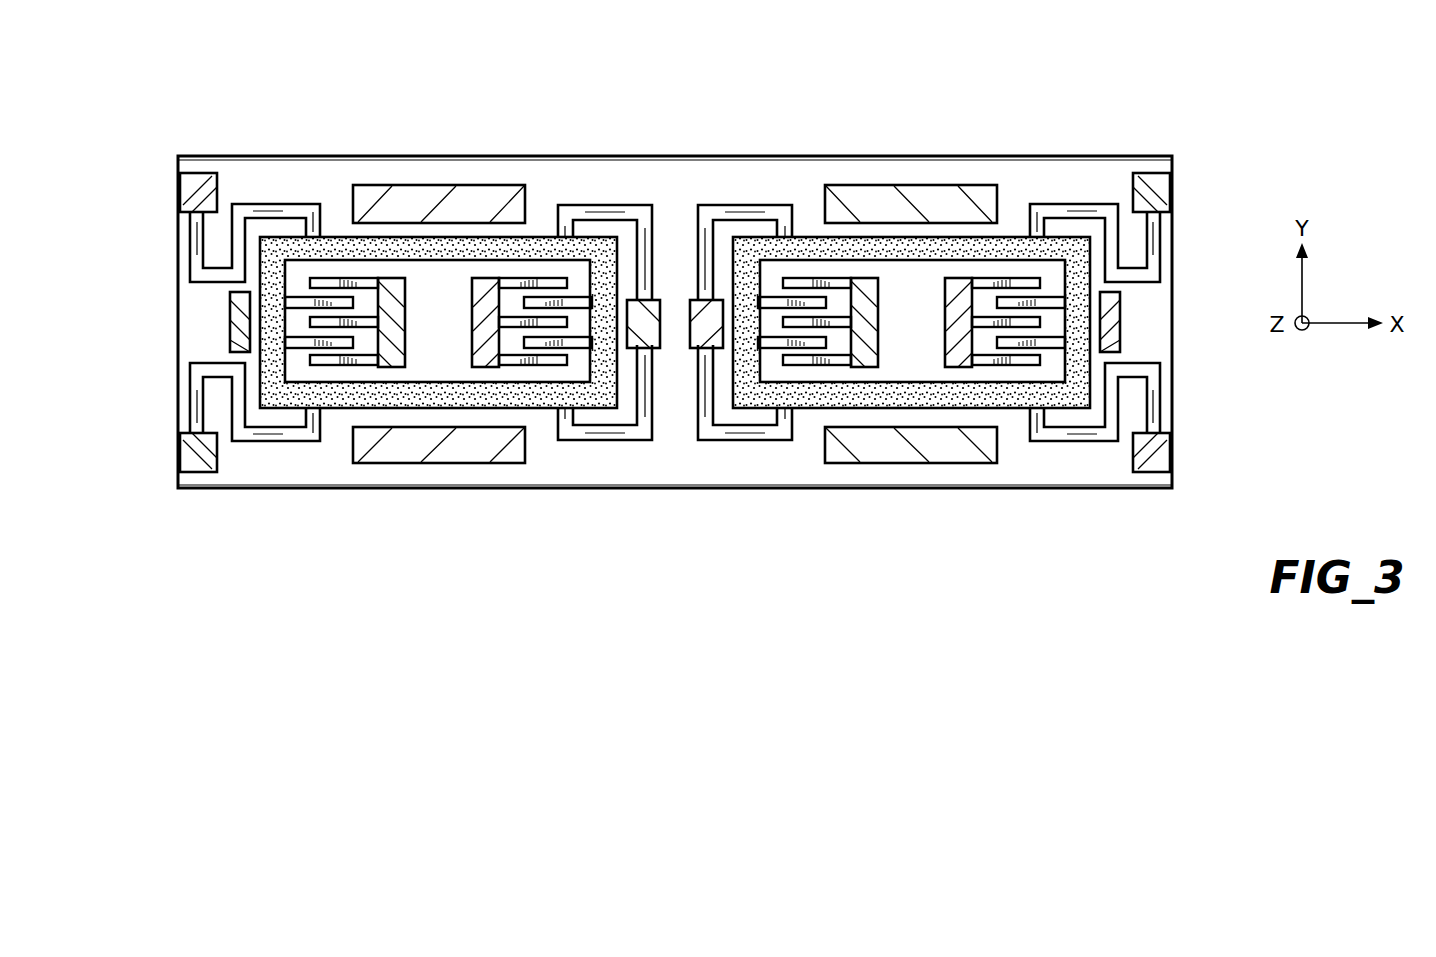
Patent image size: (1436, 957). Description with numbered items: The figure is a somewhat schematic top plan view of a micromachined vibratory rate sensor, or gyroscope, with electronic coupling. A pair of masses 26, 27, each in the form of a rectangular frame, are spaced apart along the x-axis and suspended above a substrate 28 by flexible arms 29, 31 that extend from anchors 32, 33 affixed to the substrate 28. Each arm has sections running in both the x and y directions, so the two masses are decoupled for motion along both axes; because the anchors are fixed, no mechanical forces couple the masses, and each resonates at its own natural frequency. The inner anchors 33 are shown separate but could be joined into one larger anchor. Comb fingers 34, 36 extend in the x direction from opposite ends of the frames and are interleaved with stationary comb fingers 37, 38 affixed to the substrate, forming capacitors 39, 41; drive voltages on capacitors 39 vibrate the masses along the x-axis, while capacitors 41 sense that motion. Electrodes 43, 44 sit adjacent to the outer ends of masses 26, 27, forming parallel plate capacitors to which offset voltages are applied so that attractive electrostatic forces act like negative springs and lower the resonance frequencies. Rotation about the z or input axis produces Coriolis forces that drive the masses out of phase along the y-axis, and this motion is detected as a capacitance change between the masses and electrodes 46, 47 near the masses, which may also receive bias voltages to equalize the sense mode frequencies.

The mass 26 is at (438, 387).
The mass 27 is at (913, 387).
The substrate 28 is at (677, 190).
The flexible arm 29 is at (193, 241).
The flexible arm 31 is at (603, 212).
The anchor 32 is at (199, 185).
The inner anchor 33 is at (697, 348).
The comb finger 34 is at (333, 297).
The comb finger 36 is at (556, 305).
The stationary comb finger 37 is at (333, 367).
The stationary comb finger 38 is at (810, 282).
The capacitor 39 is at (364, 376).
The capacitor 41 is at (523, 269).
The electrode 43 is at (231, 334).
The electrode 44 is at (1118, 323).
The electrode 46 is at (400, 200).
The electrode 47 is at (452, 450).